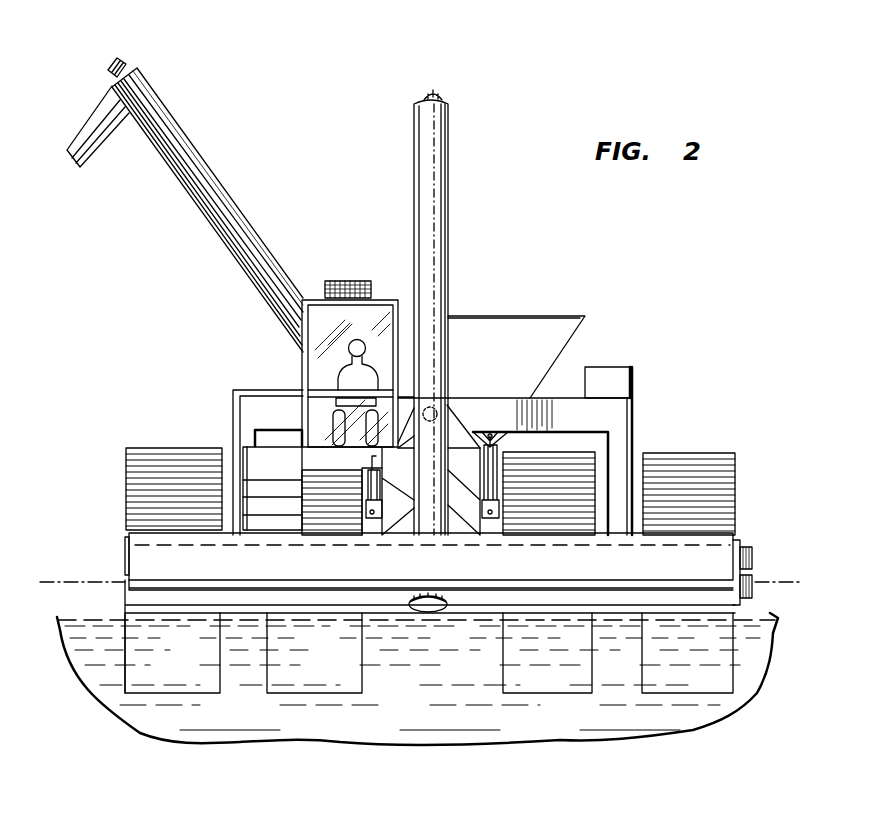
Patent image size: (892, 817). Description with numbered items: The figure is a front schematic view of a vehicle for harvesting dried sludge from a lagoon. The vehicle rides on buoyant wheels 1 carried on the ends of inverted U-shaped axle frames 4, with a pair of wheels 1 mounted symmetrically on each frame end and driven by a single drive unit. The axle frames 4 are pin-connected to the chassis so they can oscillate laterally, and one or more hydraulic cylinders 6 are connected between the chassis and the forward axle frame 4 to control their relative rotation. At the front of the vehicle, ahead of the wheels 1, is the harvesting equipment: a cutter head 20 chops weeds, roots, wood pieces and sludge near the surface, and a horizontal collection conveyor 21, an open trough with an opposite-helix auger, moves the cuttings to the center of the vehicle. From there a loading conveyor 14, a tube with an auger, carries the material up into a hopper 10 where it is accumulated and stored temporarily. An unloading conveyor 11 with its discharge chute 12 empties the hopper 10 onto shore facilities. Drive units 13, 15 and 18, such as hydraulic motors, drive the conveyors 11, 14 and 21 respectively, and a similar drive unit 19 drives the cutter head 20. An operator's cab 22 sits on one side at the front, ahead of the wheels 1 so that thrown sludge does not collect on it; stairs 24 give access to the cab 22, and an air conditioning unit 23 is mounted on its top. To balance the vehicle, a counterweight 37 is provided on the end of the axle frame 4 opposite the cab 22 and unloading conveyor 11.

The buoyant wheels 1 is at (220, 678).
The axle frames 4 is at (633, 413).
The hydraulic cylinders 6 is at (375, 481).
The hopper 10 is at (553, 327).
The unloading conveyor 11 is at (203, 212).
The discharge chute 12 is at (95, 155).
The drive unit 13 is at (122, 62).
The loading conveyor 14 is at (443, 265).
The drive unit 15 is at (440, 93).
The drive unit 18 is at (750, 582).
The drive unit 19 is at (750, 553).
The cutter head 20 is at (135, 558).
The collection conveyor 21 is at (137, 593).
The operator's cab 22 is at (302, 367).
The air conditioning unit 23 is at (348, 279).
The stairs 24 is at (253, 468).
The counterweight 37 is at (623, 368).